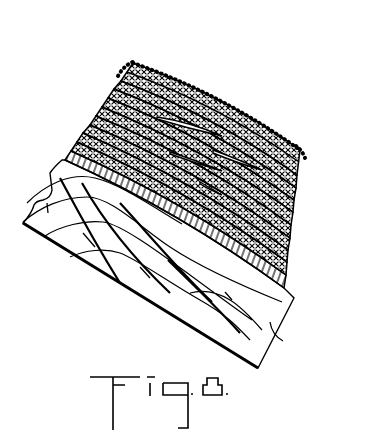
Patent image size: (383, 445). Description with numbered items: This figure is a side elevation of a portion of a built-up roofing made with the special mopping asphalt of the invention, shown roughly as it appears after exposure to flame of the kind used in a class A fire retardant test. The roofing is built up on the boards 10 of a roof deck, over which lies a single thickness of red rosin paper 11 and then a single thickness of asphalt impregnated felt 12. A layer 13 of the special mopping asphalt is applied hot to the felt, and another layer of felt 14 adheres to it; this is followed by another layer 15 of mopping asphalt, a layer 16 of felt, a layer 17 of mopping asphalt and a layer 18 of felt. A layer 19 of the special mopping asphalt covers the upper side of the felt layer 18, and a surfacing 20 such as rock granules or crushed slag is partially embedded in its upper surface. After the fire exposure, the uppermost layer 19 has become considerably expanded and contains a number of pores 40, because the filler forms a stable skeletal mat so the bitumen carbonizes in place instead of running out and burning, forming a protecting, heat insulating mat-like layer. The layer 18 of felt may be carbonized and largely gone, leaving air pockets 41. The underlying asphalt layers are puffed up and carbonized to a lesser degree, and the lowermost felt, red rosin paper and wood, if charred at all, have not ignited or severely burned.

The boards 10 is at (288, 338).
The red rosin paper 11 is at (290, 293).
The asphalt impregnated felt 12 is at (287, 283).
The layer of special mopping asphalt 13 is at (287, 267).
The layer of felt 14 is at (93, 140).
The layer of mopping asphalt 15 is at (283, 250).
The layer of felt 16 is at (110, 115).
The layer of mopping asphalt 17 is at (287, 213).
The layer of felt 18 is at (125, 89).
The layer of special mopping asphalt 19 is at (287, 183).
The surfacing 20 is at (232, 108).
The pores 40 is at (180, 72).
The air pockets 41 is at (290, 147).